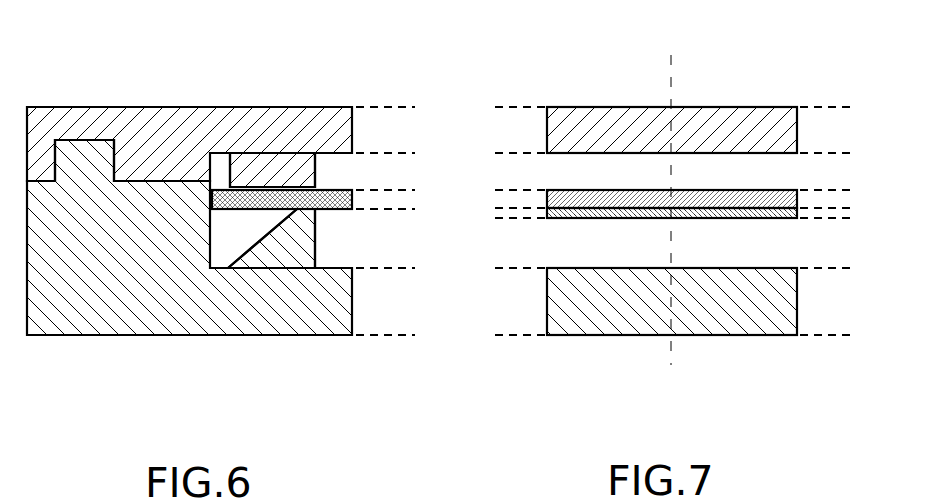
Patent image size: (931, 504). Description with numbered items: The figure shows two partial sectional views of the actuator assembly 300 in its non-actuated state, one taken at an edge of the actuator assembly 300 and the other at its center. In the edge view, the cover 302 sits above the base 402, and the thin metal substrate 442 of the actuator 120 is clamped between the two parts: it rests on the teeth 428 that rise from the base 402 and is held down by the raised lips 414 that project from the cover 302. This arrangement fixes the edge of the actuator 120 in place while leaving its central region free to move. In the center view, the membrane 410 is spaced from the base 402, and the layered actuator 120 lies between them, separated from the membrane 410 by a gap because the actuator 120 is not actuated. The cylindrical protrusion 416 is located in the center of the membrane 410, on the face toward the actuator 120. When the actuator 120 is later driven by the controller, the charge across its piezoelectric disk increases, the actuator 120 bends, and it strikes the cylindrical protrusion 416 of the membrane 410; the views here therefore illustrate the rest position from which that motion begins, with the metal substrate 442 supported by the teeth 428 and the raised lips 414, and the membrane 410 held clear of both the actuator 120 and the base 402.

In FIG. 6, the actuator assembly 300 is at (83, 79).
In FIG. 7, the actuator assembly 300 is at (601, 91).
In FIG. 6, the cover 302 is at (130, 112).
In FIG. 6, the raised lips 414 is at (287, 187).
In FIG. 6, the metal substrate 442 is at (340, 200).
In FIG. 6, the base 402 is at (130, 305).
In FIG. 7, the base 402 is at (635, 315).
In FIG. 6, the teeth 428 is at (298, 213).
In FIG. 7, the membrane 410 is at (777, 130).
In FIG. 7, the cylindrical protrusion 416 is at (688, 150).
In FIG. 7, the actuator 120 is at (547, 208).